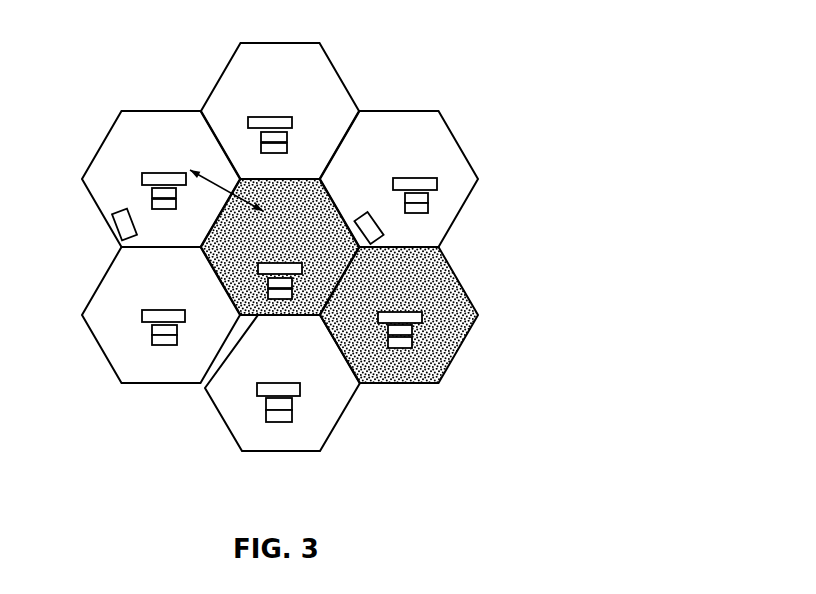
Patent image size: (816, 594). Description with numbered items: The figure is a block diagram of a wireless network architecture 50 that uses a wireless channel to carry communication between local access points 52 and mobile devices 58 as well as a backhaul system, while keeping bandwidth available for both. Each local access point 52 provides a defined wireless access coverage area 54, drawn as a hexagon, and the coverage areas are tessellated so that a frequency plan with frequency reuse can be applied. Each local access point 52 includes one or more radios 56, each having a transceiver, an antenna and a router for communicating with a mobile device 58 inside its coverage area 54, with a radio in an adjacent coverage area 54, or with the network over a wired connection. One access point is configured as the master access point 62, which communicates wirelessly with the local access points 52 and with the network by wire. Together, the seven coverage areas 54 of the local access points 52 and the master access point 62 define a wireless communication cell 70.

The wireless network architecture 50 is at (397, 455).
The local access point 52 is at (250, 121).
The wireless access coverage area 54 is at (268, 74).
The radio 56 is at (290, 137).
The mobile device 58 is at (112, 234).
The master access point 62 is at (207, 393).
The wireless communication cell 70 is at (138, 45).